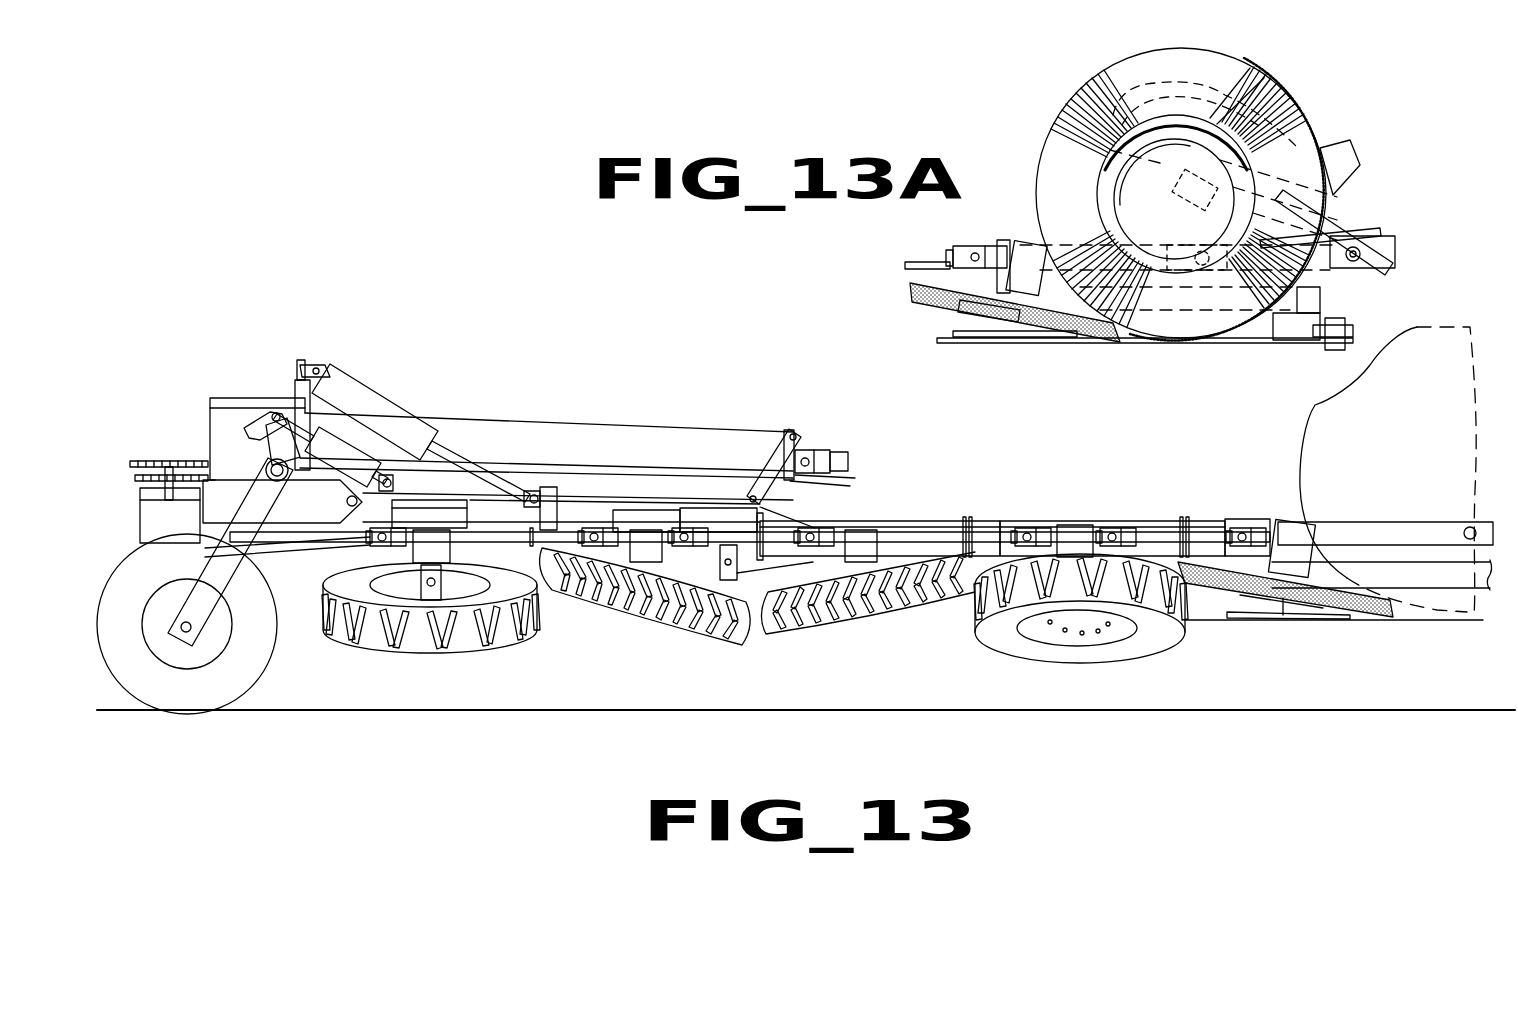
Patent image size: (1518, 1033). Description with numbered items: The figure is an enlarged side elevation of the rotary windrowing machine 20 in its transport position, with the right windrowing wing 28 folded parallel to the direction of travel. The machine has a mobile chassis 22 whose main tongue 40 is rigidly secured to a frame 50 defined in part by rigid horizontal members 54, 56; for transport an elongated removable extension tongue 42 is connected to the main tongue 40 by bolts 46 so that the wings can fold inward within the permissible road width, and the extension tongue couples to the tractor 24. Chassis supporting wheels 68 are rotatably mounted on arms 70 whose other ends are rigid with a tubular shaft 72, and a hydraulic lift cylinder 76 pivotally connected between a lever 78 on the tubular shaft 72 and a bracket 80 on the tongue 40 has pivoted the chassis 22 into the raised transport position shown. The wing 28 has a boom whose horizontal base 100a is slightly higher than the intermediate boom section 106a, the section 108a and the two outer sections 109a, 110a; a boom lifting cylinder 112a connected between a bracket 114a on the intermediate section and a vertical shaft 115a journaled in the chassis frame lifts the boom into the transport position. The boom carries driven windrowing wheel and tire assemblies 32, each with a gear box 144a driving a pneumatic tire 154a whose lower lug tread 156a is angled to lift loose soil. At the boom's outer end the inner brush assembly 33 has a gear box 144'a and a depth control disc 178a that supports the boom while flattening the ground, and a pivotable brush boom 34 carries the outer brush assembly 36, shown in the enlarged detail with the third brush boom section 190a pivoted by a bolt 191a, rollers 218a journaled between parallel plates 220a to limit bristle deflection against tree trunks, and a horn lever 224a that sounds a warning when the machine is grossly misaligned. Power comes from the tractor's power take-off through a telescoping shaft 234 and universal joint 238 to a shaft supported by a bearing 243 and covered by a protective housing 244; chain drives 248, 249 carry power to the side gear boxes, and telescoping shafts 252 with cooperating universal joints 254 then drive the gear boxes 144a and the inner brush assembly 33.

In FIG. 13, the rotary windrowing machine 20 is at (522, 356).
In FIG. 13, the mobile chassis 22 is at (218, 394).
In FIG. 13A, the tractor 24 is at (1322, 340).
In FIG. 13, the windrowing wing 28 is at (984, 518).
In FIG. 13, the windrowing wheel and tire assemblies 32 is at (522, 612).
In FIG. 13, the inner brush assembly 33 is at (1313, 603).
In FIG. 13A, the inner brush assembly 33 is at (936, 302).
In FIG. 13A, the brush boom 34 is at (953, 268).
In FIG. 13, the outer brush assembly 36 is at (1306, 410).
In FIG. 13A, the outer brush assembly 36 is at (1050, 110).
In FIG. 13, the main tongue 40 is at (778, 506).
In FIG. 13, the extension tongue 42 is at (1446, 590).
In FIG. 13A, the extension tongue 42 is at (1322, 300).
In FIG. 13, the bolts 46 is at (737, 572).
In FIG. 13, the frame 50 is at (322, 400).
In FIG. 13, the horizontal member 54 is at (306, 473).
In FIG. 13, the horizontal member 56 is at (300, 540).
In FIG. 13, the chassis supporting wheels 68 is at (243, 690).
In FIG. 13, the arms 70 is at (207, 563).
In FIG. 13, the tubular shaft 72 is at (265, 474).
In FIG. 13, the hydraulic lift cylinder 76 is at (345, 455).
In FIG. 13, the lever 78 is at (256, 430).
In FIG. 13, the bracket 80 is at (385, 473).
In FIG. 13, the horizontal base 100a is at (330, 548).
In FIG. 13, the intermediate boom section 106a is at (712, 507).
In FIG. 13, the boom section 108a is at (936, 520).
In FIG. 13, the outer boom section 109a is at (1133, 520).
In FIG. 13, the outer boom section 110a is at (1230, 518).
In FIG. 13, the boom lifting cylinder 112a is at (378, 398).
In FIG. 13, the bracket 114a is at (548, 486).
In FIG. 13, the vertical shaft 115a is at (300, 362).
In FIG. 13, the gear boxes 144a is at (410, 548).
In FIG. 13, the gear box 144'a is at (1380, 548).
In FIG. 13A, the gear box 144'a is at (1003, 247).
In FIG. 13, the pneumatic tire 154a is at (735, 646).
In FIG. 13, the lower lug tread 156a is at (617, 630).
In FIG. 13, the depth control disc 178a is at (1335, 616).
In FIG. 13A, the depth control disc 178a is at (1020, 338).
In FIG. 13A, the third brush boom section 190a is at (1330, 218).
In FIG. 13A, the bolt 191a is at (1390, 246).
In FIG. 13A, the rollers 218a is at (1265, 100).
In FIG. 13A, the parallel plates 220a is at (1090, 73).
In FIG. 13A, the horn lever 224a is at (1340, 150).
In FIG. 13, the telescoping shaft 234 is at (848, 461).
In FIG. 13, the universal joint 238 is at (806, 452).
In FIG. 13, the bearing 243 is at (840, 478).
In FIG. 13, the protective housing 244 is at (504, 417).
In FIG. 13, the chain drive 248 is at (140, 486).
In FIG. 13, the chain drive 249 is at (184, 459).
In FIG. 13, the telescoping shafts 252 is at (528, 535).
In FIG. 13A, the telescoping shafts 252 is at (950, 257).
In FIG. 13, the universal joints 254 is at (600, 528).
In FIG. 13A, the universal joints 254 is at (973, 251).